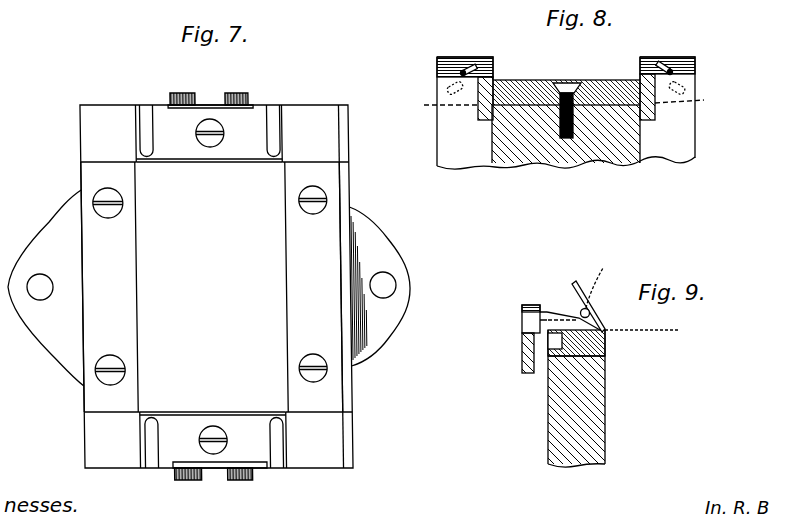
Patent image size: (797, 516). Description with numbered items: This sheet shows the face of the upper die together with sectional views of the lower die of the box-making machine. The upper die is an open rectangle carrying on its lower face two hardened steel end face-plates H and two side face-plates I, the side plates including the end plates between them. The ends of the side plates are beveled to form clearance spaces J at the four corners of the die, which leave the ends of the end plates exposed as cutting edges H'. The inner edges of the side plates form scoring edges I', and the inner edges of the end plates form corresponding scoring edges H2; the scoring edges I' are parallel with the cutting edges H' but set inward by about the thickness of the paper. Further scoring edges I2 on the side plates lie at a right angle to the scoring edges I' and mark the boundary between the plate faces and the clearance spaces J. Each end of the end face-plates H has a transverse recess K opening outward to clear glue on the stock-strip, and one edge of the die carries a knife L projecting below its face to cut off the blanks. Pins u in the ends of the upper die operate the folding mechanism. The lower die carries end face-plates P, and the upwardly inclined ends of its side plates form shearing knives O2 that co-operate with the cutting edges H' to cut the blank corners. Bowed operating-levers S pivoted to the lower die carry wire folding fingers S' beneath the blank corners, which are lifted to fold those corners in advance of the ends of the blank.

In FIG. 7, the end face-plate H is at (211, 286).
In FIG. 7, the cutting edge H' is at (209, 286).
In FIG. 7, the scoring edge H2 is at (236, 410).
In FIG. 7, the side face-plate I is at (212, 287).
In FIG. 7, the scoring edge I' is at (211, 287).
In FIG. 7, the scoring edge I2 is at (210, 288).
In FIG. 7, the clearance space J is at (216, 284).
In FIG. 7, the transverse recess K is at (146, 487).
In FIG. 7, the pin u is at (218, 286).
In FIG. 7, the knife L is at (349, 178).
In FIG. 8, the end face-plate P is at (606, 80).
In FIG. 9, the operating-lever S is at (525, 339).
In FIG. 8, the folding finger S' is at (576, 53).
In FIG. 9, the folding finger S' is at (576, 306).
In FIG. 8, the inclined shearing knife O2 is at (564, 98).
In FIG. 9, the inclined shearing knife O2 is at (601, 280).